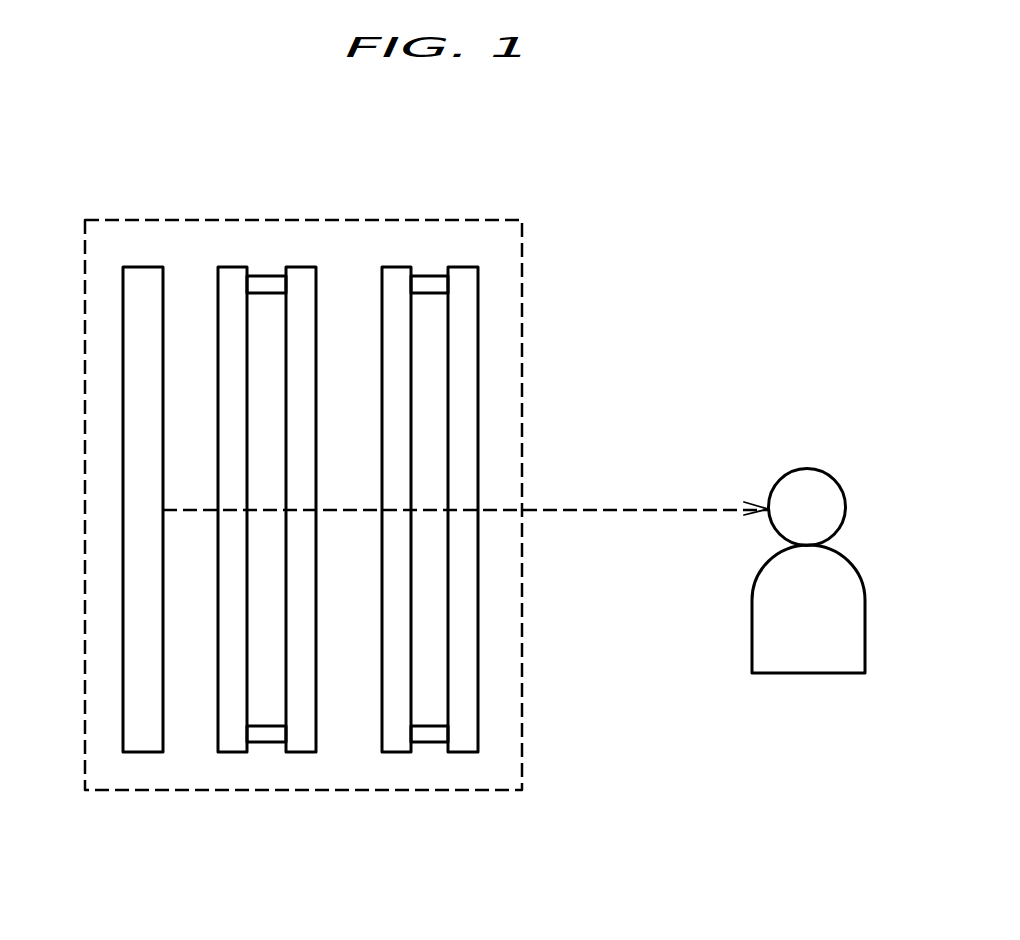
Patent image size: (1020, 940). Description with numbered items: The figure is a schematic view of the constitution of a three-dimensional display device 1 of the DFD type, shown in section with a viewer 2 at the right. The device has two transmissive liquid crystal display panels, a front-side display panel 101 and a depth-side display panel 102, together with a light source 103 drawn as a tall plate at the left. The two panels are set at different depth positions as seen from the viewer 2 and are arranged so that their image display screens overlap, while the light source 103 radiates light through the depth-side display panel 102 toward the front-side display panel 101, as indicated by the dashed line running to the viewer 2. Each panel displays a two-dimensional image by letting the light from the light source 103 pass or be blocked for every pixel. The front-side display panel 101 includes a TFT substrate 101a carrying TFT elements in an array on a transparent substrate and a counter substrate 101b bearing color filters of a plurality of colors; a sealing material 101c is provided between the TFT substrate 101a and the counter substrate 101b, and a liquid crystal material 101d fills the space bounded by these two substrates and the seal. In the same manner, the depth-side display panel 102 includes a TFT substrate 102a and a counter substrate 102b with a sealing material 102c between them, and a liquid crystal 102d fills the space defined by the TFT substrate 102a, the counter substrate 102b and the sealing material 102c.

The three-dimensional display device 1 is at (522, 260).
The viewer 2 is at (808, 490).
The front-side display panel 101 is at (515, 530).
The TFT substrate 101a is at (397, 733).
The counter substrate 101b is at (473, 717).
The sealing material 101c is at (425, 282).
The liquid crystal material 101d is at (430, 665).
The depth-side display panel 102 is at (191, 518).
The TFT substrate 102a is at (235, 728).
The counter substrate 102b is at (303, 728).
The sealing material 102c is at (262, 283).
The liquid crystal 102d is at (260, 648).
The light source 103 is at (143, 285).